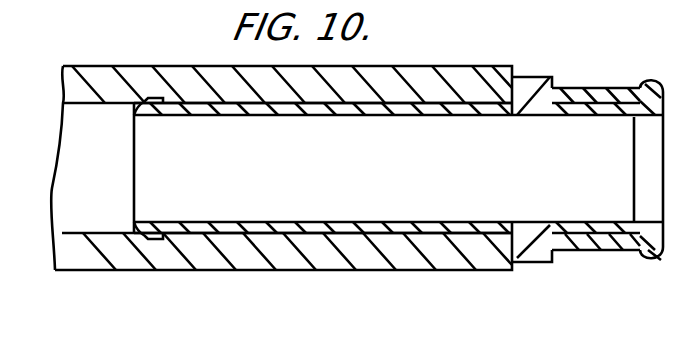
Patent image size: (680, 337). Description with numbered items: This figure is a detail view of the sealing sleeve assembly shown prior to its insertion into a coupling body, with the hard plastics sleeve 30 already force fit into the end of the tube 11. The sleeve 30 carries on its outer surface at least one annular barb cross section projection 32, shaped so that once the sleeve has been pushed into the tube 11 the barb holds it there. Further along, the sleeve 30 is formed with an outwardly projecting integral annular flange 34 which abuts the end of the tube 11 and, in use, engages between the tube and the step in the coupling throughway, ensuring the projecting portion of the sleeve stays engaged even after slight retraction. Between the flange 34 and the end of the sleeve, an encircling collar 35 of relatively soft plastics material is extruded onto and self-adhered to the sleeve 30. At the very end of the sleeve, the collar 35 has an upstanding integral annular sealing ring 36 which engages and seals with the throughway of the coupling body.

The tube 11 is at (91, 257).
The hard plastics sleeve 30 is at (268, 228).
The annular barb cross section projection 32 is at (157, 233).
The annular flange 34 is at (533, 257).
The collar 35 is at (608, 249).
The annular sealing ring 36 is at (652, 257).